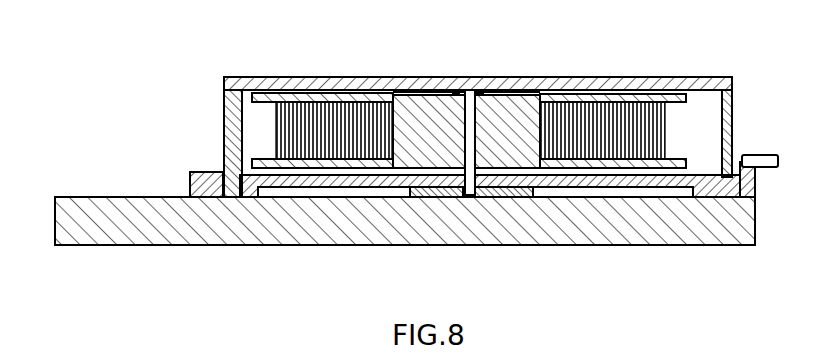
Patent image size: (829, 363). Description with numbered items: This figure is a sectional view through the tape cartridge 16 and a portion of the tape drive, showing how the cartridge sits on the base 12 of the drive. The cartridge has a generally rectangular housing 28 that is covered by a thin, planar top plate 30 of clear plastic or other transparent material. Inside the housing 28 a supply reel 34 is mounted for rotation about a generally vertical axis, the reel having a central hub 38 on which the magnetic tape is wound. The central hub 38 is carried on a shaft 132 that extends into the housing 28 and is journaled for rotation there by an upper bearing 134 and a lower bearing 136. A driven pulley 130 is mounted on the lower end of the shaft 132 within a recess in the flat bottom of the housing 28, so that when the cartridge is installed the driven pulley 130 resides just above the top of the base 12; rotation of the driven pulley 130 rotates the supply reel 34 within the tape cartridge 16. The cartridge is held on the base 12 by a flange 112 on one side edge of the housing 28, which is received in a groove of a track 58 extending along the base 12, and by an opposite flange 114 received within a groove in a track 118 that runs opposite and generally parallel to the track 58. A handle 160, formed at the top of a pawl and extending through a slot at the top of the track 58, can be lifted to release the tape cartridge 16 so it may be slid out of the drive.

The base 12 is at (426, 235).
The tape cartridge 16 is at (467, 121).
The housing 28 is at (733, 108).
The top plate 30 is at (668, 84).
The supply reel 34 is at (331, 96).
The central hub 38 is at (473, 108).
The track 58 is at (757, 184).
The flange 112 is at (737, 212).
The flange 114 is at (220, 198).
The track 118 is at (197, 172).
The driven pulley 130 is at (523, 197).
The shaft 132 is at (466, 90).
The upper bearing 134 is at (455, 92).
The lower bearing 136 is at (490, 158).
The handle 160 is at (750, 153).